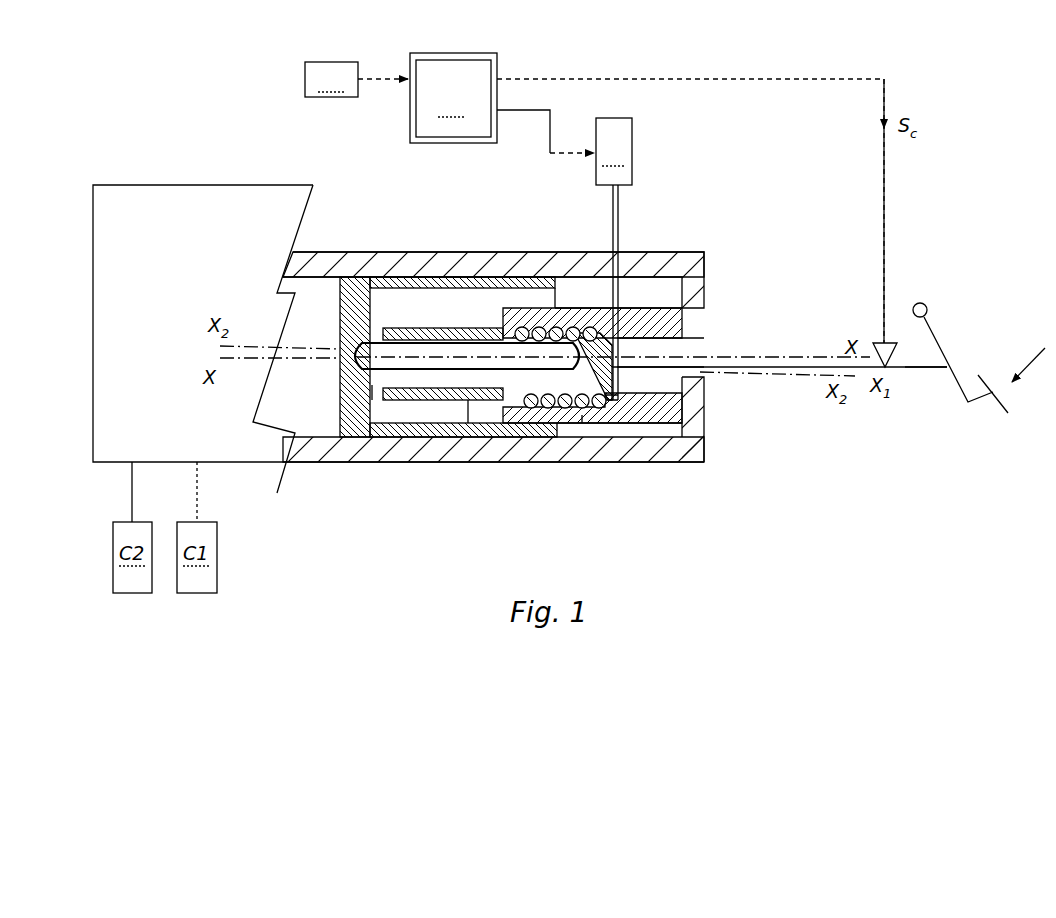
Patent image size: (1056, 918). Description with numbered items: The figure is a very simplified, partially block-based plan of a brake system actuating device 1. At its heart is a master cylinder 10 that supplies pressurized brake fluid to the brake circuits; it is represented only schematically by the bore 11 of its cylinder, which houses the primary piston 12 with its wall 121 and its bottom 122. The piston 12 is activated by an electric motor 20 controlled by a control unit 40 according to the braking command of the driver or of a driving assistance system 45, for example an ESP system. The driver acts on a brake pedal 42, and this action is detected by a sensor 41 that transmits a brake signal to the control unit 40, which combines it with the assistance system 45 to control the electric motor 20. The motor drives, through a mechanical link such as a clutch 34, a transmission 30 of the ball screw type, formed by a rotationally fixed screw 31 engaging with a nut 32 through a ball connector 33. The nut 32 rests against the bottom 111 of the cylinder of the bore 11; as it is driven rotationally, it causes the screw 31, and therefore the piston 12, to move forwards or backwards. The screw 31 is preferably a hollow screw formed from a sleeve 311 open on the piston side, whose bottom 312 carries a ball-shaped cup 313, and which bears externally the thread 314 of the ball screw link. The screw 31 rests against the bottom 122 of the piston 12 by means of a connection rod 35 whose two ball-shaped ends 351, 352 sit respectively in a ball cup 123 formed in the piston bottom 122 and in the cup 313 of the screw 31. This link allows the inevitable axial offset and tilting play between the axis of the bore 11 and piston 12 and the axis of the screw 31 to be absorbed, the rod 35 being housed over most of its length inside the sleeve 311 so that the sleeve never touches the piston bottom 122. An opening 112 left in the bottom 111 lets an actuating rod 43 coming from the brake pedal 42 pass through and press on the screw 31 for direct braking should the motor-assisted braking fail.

The brake system actuating device 1 is at (158, 78).
The master cylinder 10 is at (224, 200).
The bore 11 is at (336, 276).
The piston 12 is at (493, 240).
The wall 121 is at (443, 277).
The bottom of the piston 122 is at (505, 214).
The ball cup 123 is at (340, 450).
The electric motor 20 is at (614, 151).
The transmission 30 is at (640, 299).
The screw 31 is at (530, 438).
The sleeve 311 is at (510, 412).
The bottom of the sleeve 312 is at (517, 523).
The cup 313 is at (573, 405).
The thread 314 is at (493, 338).
The nut 32 is at (708, 402).
The ball connector 33 is at (560, 322).
The clutch 34 is at (620, 222).
The connection rod 35 is at (505, 449).
The first end of the connection rod 351 is at (372, 392).
The second end of the connection rod 352 is at (583, 412).
The control unit 40 is at (647, 198).
The sensor 41 is at (880, 342).
The brake pedal 42 is at (946, 346).
The actuating rod 43 is at (905, 369).
The driving assistance system 45 is at (356, 79).
The bottom of the bore 111 is at (708, 310).
The opening 112 is at (710, 352).